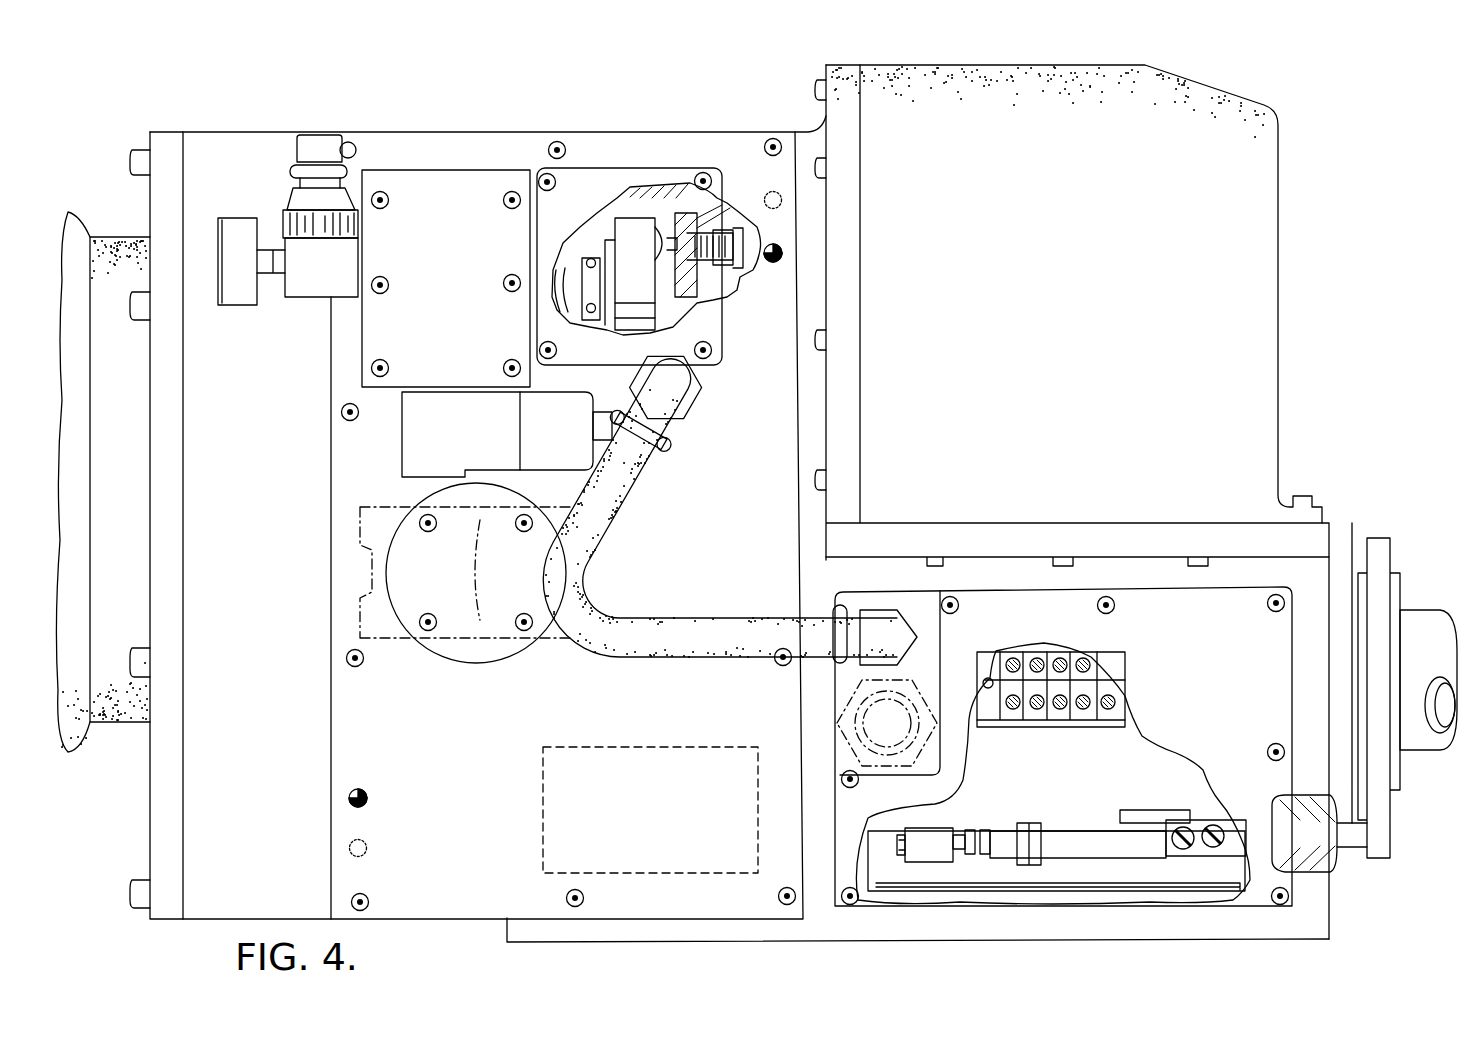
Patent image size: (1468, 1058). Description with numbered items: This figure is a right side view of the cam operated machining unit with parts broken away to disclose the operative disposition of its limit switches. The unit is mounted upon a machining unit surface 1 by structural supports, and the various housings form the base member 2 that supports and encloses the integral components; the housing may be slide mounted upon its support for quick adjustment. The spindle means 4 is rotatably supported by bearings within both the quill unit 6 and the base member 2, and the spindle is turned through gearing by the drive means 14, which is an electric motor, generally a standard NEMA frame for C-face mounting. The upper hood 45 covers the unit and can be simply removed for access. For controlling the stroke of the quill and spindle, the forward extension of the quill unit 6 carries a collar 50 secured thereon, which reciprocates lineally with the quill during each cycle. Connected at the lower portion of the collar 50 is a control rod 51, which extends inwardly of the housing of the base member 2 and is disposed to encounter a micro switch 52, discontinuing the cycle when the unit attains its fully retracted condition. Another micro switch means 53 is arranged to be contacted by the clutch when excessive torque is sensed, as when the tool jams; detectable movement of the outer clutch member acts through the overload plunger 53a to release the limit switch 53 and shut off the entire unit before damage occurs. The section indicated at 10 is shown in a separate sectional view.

The machining unit surface 1 is at (895, 942).
The base member 2 is at (447, 911).
The spindle means 4 is at (1412, 612).
The quill unit 6 is at (1252, 517).
The section line 10- 10 is at (770, 132).
The drive means 14 is at (82, 738).
The upper hood 45 is at (1256, 282).
The collar 50 is at (1395, 852).
The control rod 51 is at (1080, 845).
The micro switch 52 is at (933, 838).
The micro switch means 53 is at (628, 262).
The overload plunger 53a is at (713, 281).